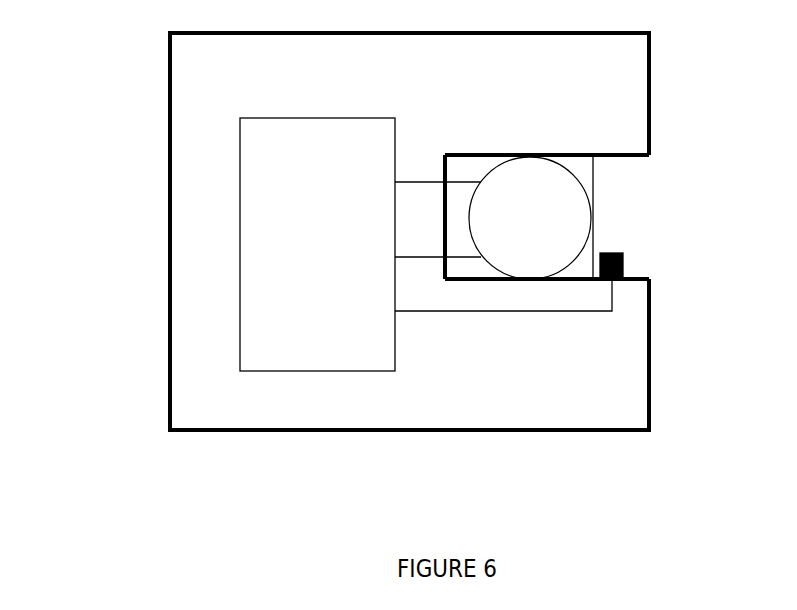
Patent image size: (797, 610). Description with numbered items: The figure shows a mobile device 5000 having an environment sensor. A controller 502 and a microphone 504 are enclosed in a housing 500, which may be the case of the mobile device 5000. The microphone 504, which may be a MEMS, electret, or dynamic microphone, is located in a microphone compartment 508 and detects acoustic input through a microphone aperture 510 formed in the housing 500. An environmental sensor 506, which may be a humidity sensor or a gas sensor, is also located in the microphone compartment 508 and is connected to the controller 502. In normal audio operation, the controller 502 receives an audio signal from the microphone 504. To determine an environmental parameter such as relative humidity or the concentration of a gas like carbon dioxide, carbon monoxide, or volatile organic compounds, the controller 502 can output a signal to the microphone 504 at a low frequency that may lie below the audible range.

The mobile device 5000 is at (467, 497).
The housing 500 is at (168, 208).
The controller 502 is at (333, 372).
The microphone 504 is at (522, 157).
The environmental sensor 506 is at (611, 253).
The microphone compartment 508 is at (606, 182).
The microphone aperture 510 is at (647, 185).